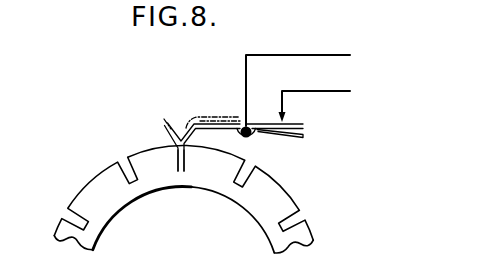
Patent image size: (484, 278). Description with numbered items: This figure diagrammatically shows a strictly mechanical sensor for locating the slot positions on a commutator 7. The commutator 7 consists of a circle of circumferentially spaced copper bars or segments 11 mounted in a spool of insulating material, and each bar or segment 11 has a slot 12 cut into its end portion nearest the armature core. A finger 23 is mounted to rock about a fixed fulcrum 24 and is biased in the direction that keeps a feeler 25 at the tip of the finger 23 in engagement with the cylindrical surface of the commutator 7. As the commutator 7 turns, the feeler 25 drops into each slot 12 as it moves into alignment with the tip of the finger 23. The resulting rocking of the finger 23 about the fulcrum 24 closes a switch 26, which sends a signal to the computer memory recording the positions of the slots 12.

The commutator 7 is at (91, 179).
The copper bars or segments 11 is at (80, 194).
The slot 12 is at (65, 213).
The finger 23 is at (212, 97).
The fixed fulcrum 24 is at (257, 139).
The feeler 25 is at (184, 172).
The switch 26 is at (288, 121).